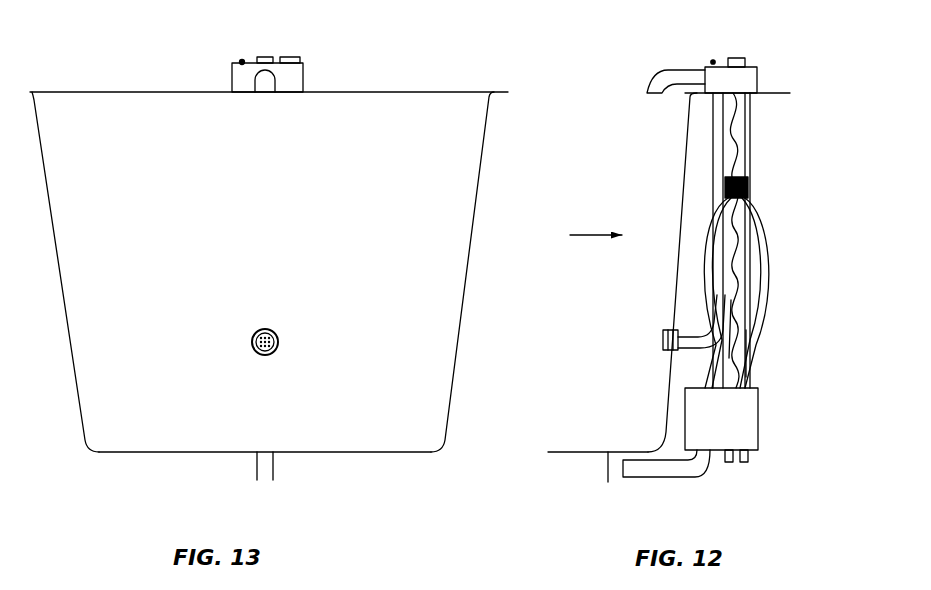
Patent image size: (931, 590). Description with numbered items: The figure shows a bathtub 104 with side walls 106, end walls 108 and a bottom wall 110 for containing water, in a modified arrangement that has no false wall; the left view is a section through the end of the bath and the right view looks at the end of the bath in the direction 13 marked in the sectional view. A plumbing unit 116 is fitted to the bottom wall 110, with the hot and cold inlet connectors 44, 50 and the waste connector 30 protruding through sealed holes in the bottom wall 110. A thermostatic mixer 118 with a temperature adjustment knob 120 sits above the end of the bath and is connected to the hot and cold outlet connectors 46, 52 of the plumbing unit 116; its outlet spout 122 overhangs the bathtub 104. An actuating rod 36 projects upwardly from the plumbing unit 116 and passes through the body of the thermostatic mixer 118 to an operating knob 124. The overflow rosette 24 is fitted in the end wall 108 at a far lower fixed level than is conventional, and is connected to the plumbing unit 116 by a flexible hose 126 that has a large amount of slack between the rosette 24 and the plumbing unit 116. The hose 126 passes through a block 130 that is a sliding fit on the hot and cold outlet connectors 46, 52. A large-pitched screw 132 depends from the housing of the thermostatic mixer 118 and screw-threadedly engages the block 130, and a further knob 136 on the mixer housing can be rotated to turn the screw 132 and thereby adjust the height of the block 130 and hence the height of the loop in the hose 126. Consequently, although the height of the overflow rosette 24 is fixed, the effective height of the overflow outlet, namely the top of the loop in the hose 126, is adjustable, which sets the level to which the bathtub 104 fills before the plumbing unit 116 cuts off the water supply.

In FIG. 12, the direction 13 is at (573, 237).
In FIG. 13, the overflow rosette 24 is at (279, 333).
In FIG. 12, the overflow rosette 24 is at (662, 328).
In FIG. 12, the waste connector 30 is at (697, 472).
In FIG. 12, the actuating rod 36 is at (704, 135).
In FIG. 12, the hot inlet connector 44 is at (732, 467).
In FIG. 12, the hot outlet connector 46 is at (729, 358).
In FIG. 12, the cold inlet connector 50 is at (748, 464).
In FIG. 12, the cold outlet connector 52 is at (746, 377).
In FIG. 13, the bathtub 104 is at (292, 340).
In FIG. 13, the side walls 106 is at (458, 356).
In FIG. 12, the side walls 106 is at (601, 272).
In FIG. 13, the end walls 108 is at (493, 272).
In FIG. 12, the end walls 108 is at (601, 272).
In FIG. 13, the bottom wall 110 is at (177, 456).
In FIG. 12, the bottom wall 110 is at (661, 389).
In FIG. 12, the plumbing unit 116 is at (760, 423).
In FIG. 13, the thermostatic mixer 118 is at (268, 49).
In FIG. 12, the thermostatic mixer 118 is at (709, 53).
In FIG. 13, the temperature adjustment knob 120 is at (260, 57).
In FIG. 13, the outlet spout 122 is at (274, 89).
In FIG. 12, the outlet spout 122 is at (657, 72).
In FIG. 13, the operating knob 124 is at (240, 60).
In FIG. 12, the operating knob 124 is at (710, 60).
In FIG. 12, the flexible hose 126 is at (703, 244).
In FIG. 12, the block 130 is at (752, 173).
In FIG. 12, the large-pitched screw 132 is at (746, 121).
In FIG. 13, the further knob 136 is at (300, 57).
In FIG. 12, the further knob 136 is at (739, 58).